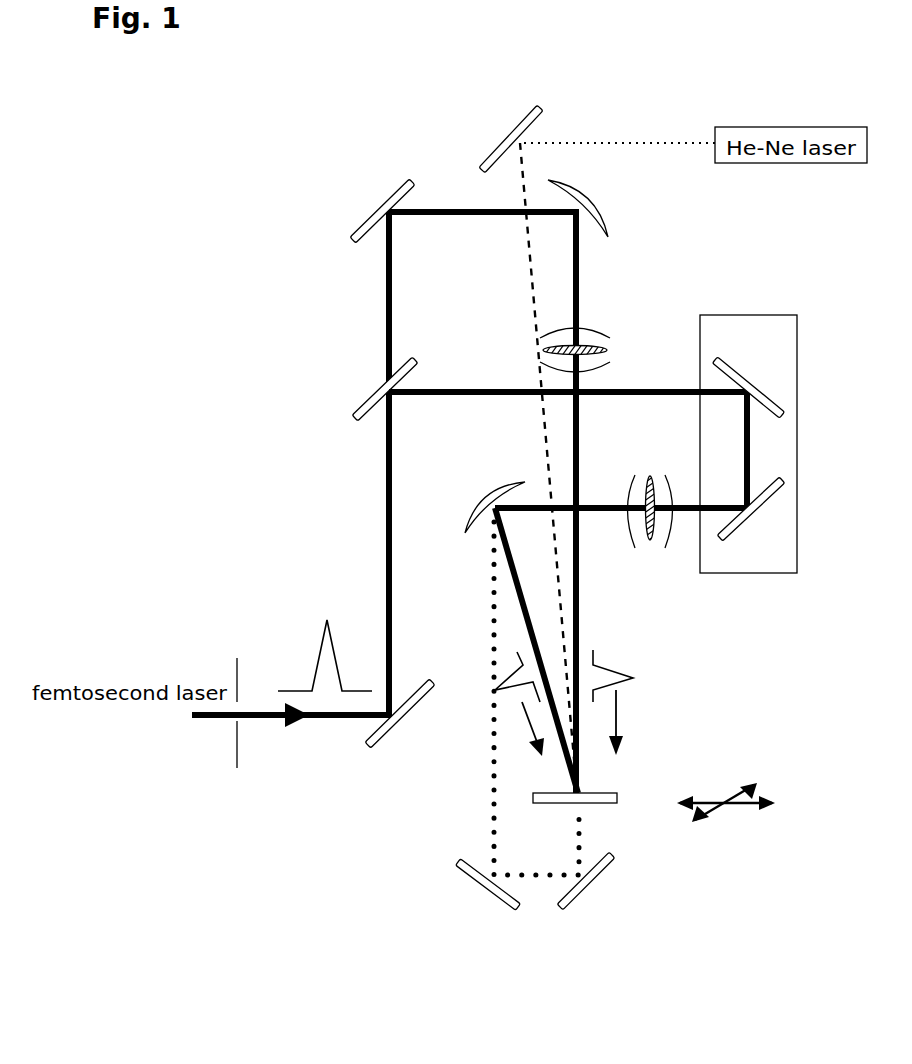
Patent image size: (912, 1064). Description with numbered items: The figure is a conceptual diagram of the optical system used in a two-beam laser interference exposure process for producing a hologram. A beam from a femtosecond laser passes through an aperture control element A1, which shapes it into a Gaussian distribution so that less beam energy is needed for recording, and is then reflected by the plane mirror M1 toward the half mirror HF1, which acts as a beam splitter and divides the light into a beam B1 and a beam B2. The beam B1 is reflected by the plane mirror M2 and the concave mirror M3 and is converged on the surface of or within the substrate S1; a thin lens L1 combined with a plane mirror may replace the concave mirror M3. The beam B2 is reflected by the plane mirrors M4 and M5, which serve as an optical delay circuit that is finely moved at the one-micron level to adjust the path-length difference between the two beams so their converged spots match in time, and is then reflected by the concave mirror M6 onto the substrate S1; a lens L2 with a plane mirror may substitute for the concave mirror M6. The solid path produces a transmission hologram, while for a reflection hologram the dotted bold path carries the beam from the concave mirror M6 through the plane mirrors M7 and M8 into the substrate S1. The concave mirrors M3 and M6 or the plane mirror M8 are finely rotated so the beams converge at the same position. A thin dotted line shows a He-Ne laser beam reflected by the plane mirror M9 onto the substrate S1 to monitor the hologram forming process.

The plane mirror M1 is at (400, 714).
The plane mirror M2 is at (367, 209).
The concave mirror M3 is at (584, 201).
The plane mirror M4 is at (748, 387).
The plane mirror M5 is at (753, 509).
The concave mirror M6 is at (474, 495).
The plane mirror M7 is at (486, 884).
The plane mirror M8 is at (588, 881).
The plane mirror M9 is at (500, 139).
The half mirror HF1 is at (371, 389).
The lens L1 is at (587, 350).
The lens L2 is at (650, 520).
The substrate S1 is at (588, 798).
The aperture control element A1 is at (244, 729).
The beam B1 is at (624, 501).
The beam B2 is at (569, 591).